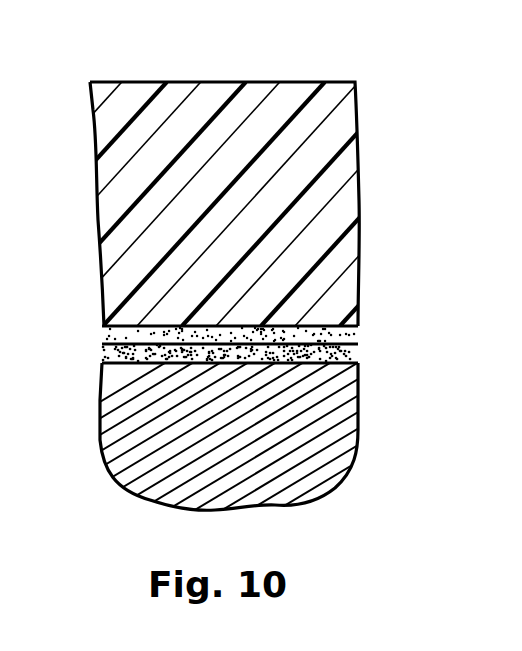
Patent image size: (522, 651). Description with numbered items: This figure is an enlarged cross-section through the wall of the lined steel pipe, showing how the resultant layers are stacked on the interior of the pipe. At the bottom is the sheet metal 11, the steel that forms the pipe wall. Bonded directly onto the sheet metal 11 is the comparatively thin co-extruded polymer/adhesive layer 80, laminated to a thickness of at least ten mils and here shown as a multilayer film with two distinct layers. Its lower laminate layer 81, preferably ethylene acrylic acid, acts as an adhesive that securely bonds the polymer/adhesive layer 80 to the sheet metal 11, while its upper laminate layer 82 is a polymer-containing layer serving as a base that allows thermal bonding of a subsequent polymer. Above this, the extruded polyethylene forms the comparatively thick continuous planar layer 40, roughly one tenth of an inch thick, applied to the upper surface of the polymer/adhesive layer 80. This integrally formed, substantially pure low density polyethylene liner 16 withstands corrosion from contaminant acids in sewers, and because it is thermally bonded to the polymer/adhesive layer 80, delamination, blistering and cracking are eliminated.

The low density polyethylene liner 16 is at (261, 167).
The continuous planar layer 40 is at (182, 97).
The polymer/adhesive layer 80 is at (212, 362).
The lower laminate layer 81 is at (99, 354).
The upper laminate layer 82 is at (101, 327).
The sheet metal 11 is at (145, 464).